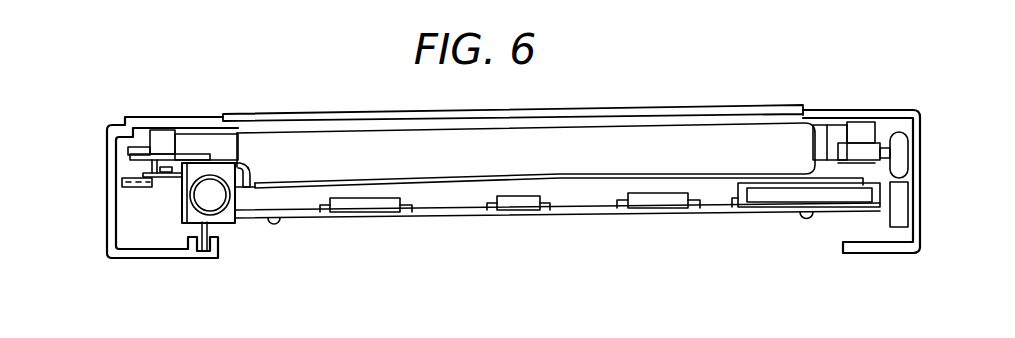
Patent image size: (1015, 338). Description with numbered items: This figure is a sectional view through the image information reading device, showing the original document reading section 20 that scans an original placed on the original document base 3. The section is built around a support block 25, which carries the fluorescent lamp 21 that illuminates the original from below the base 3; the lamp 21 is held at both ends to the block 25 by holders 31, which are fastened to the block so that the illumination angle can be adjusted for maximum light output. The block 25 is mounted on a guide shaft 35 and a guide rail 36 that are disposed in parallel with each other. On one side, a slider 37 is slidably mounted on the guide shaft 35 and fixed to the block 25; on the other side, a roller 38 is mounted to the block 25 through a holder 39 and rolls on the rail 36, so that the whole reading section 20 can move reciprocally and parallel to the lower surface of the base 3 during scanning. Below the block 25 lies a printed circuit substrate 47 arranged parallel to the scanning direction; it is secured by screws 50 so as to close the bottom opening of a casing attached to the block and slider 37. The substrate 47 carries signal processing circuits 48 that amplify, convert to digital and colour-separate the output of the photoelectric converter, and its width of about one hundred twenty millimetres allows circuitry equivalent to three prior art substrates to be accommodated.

The original document base 3 is at (585, 123).
The original document reading section 20 is at (585, 222).
The fluorescent lamp 21 is at (206, 138).
The support block 25 is at (822, 170).
The holder 31 is at (162, 137).
The guide shaft 35 is at (213, 203).
The guide rail 36 is at (902, 208).
The slider 37 is at (235, 217).
The roller 38 is at (903, 155).
The holder 39 is at (872, 148).
The printed circuit substrate 47 is at (708, 212).
The signal processing circuits 48 is at (393, 208).
The screws 50 is at (280, 224).